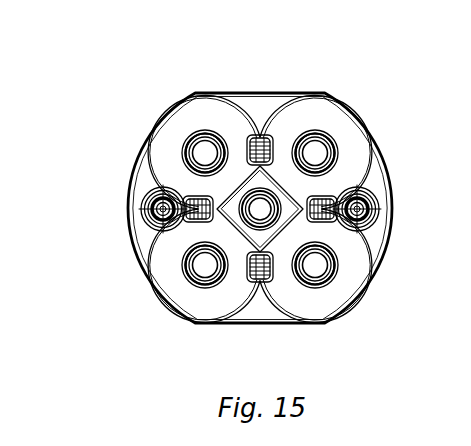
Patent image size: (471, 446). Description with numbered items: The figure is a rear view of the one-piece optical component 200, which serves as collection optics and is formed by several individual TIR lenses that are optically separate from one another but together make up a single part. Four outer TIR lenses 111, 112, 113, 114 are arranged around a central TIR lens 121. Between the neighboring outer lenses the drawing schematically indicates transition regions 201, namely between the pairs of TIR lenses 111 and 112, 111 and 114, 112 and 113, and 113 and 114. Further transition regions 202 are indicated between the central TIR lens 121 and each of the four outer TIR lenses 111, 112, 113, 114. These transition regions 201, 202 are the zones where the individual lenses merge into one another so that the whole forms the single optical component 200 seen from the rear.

The optical component 200 is at (238, 102).
The transition regions 201 is at (274, 138).
The transition regions 202 is at (327, 144).
The TIR lens 111 is at (336, 141).
The TIR lens 112 is at (203, 148).
The TIR lens 113 is at (184, 271).
The TIR lens 114 is at (333, 270).
The central TIR lens 121 is at (358, 186).